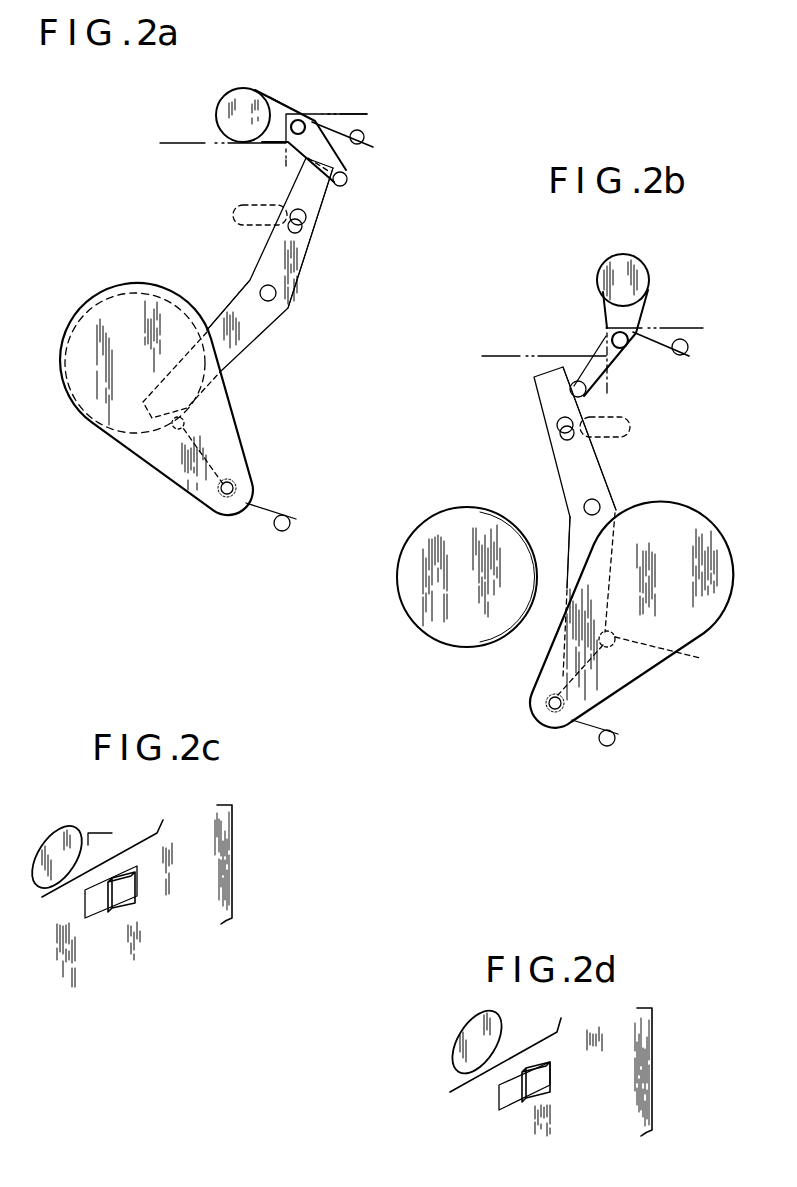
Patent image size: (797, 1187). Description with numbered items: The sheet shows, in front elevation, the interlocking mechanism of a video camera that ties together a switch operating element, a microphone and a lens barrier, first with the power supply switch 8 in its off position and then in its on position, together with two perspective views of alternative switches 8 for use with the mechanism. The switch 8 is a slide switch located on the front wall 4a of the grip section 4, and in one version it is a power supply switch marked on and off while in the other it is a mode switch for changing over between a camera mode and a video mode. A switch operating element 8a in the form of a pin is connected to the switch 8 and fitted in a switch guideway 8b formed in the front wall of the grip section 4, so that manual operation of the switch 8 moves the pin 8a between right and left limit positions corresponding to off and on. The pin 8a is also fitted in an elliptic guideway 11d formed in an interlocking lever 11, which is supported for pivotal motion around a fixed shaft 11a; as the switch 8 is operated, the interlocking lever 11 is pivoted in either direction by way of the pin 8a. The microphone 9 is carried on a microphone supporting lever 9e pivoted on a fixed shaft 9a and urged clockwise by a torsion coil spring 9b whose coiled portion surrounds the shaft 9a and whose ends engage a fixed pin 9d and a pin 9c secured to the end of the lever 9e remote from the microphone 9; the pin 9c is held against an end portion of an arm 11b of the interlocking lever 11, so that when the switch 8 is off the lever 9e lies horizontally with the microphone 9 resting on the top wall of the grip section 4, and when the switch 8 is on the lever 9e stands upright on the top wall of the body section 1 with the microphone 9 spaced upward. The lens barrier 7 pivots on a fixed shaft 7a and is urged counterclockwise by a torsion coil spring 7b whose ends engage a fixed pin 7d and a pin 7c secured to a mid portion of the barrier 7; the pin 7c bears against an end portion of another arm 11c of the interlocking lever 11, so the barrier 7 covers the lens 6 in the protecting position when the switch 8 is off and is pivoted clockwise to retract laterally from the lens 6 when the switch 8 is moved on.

In FIG. 2a, the body section 1 is at (339, 111).
In FIG. 2b, the body section 1 is at (678, 323).
In FIG. 2a, the grip section 4 is at (180, 141).
In FIG. 2b, the grip section 4 is at (505, 355).
In FIG. 2c, the front wall 4a is at (200, 873).
In FIG. 2d, the front wall 4a is at (622, 1071).
In FIG. 2a, the lens 6 is at (82, 378).
In FIG. 2b, the lens 6 is at (440, 630).
In FIG. 2a, the lens barrier 7 is at (173, 471).
In FIG. 2b, the lens barrier 7 is at (690, 531).
In FIG. 2a, the fixed shaft 7a is at (223, 497).
In FIG. 2b, the fixed shaft 7a is at (546, 703).
In FIG. 2a, the torsion coil spring 7b is at (263, 508).
In FIG. 2b, the torsion coil spring 7b is at (588, 727).
In FIG. 2a, the pin 7c is at (140, 452).
In FIG. 2b, the pin 7c is at (665, 654).
In FIG. 2a, the fixed pin 7d is at (288, 532).
In FIG. 2b, the fixed pin 7d is at (616, 741).
In FIG. 2c, the power supply switch 8 is at (123, 868).
In FIG. 2d, the power supply switch 8 is at (548, 1060).
In FIG. 2a, the switch operating element 8a is at (307, 215).
In FIG. 2b, the switch operating element 8a is at (559, 423).
In FIG. 2a, the switch guideway 8b is at (232, 207).
In FIG. 2b, the switch guideway 8b is at (655, 415).
In FIG. 2a, the microphone 9 is at (235, 90).
In FIG. 2b, the microphone 9 is at (610, 258).
In FIG. 2a, the fixed shaft 9a is at (301, 118).
In FIG. 2b, the fixed shaft 9a is at (611, 336).
In FIG. 2a, the torsion coil spring 9b is at (344, 112).
In FIG. 2b, the torsion coil spring 9b is at (661, 363).
In FIG. 2a, the pin 9c is at (348, 180).
In FIG. 2b, the pin 9c is at (574, 385).
In FIG. 2a, the fixed pin 9d is at (365, 138).
In FIG. 2b, the fixed pin 9d is at (708, 353).
In FIG. 2a, the microphone supporting lever 9e is at (280, 100).
In FIG. 2b, the microphone supporting lever 9e is at (636, 312).
In FIG. 2a, the interlocking lever 11 is at (246, 283).
In FIG. 2b, the interlocking lever 11 is at (558, 487).
In FIG. 2a, the fixed shaft 11a is at (277, 295).
In FIG. 2b, the fixed shaft 11a is at (600, 503).
In FIG. 2a, the arm 11b is at (330, 238).
In FIG. 2b, the arm 11b is at (584, 460).
In FIG. 2a, the arm 11c is at (244, 330).
In FIG. 2b, the arm 11c is at (579, 543).
In FIG. 2a, the elliptic guideway 11d is at (305, 233).
In FIG. 2b, the elliptic guideway 11d is at (562, 440).